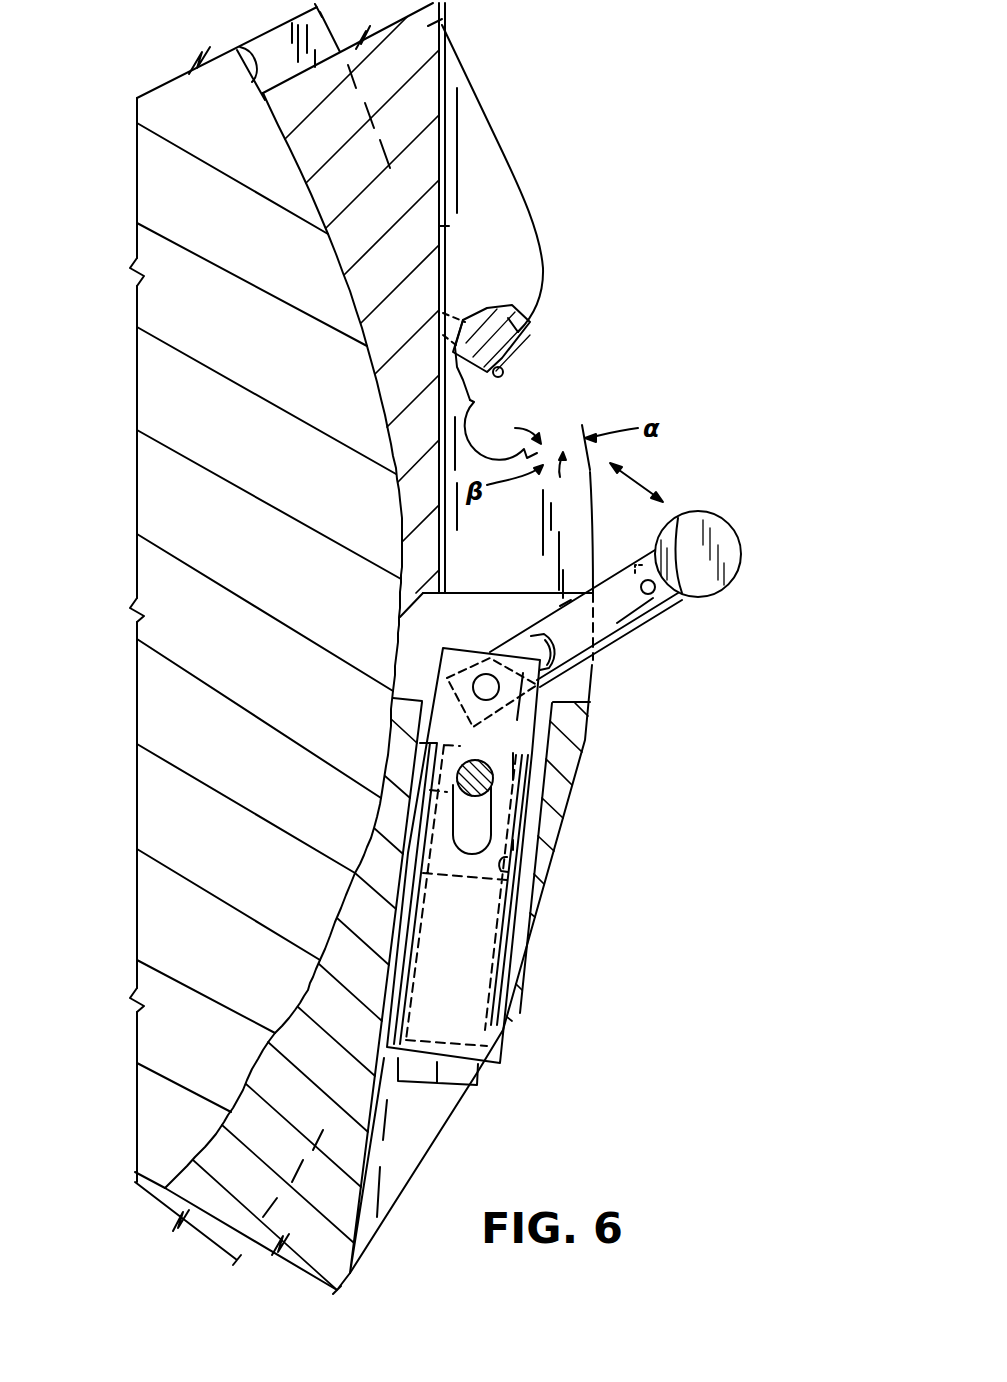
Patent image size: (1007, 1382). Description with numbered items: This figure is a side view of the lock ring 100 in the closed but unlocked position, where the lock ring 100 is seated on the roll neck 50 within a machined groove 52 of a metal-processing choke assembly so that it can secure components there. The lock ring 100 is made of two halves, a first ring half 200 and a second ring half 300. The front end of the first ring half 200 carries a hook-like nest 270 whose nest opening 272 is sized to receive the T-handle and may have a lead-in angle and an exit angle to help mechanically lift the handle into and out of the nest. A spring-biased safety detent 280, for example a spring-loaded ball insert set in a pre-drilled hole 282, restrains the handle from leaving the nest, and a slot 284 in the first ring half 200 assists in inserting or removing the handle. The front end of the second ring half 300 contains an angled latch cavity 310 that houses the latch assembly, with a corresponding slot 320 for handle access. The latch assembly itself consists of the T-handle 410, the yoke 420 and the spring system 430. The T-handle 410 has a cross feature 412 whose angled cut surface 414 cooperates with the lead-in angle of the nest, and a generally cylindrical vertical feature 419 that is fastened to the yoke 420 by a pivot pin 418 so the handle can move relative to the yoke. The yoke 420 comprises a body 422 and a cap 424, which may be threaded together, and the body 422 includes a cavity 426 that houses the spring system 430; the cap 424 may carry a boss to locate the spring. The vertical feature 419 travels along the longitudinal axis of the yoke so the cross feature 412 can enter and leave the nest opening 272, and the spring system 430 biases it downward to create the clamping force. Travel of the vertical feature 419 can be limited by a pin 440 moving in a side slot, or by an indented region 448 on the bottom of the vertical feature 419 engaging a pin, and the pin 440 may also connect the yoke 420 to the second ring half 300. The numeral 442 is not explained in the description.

The roll neck 50 is at (160, 892).
The machined groove 52 is at (242, 47).
The lock ring 100 is at (519, 115).
The first ring half 200 is at (428, 26).
The nest 270 is at (573, 376).
The nest opening 272 is at (497, 417).
The safety detent 280 is at (500, 367).
The pre-drilled hole 282 is at (517, 320).
The slot 284 is at (445, 227).
The second ring half 300 is at (353, 1268).
The latch cavity 310 is at (543, 732).
The slot 320 is at (580, 682).
The T-handle 410 is at (669, 567).
The cross feature 412 is at (741, 537).
The angled cut surface 414 is at (667, 520).
The pivot pin 418 is at (473, 685).
The vertical feature 419 is at (565, 623).
The yoke 420 is at (537, 893).
The body 422 is at (503, 967).
The cap 424 is at (458, 1075).
The cavity 426 is at (513, 845).
The spring system 430 is at (490, 932).
The pin 440 is at (495, 781).
The slot 442 is at (481, 823).
The indented region 448 is at (517, 645).